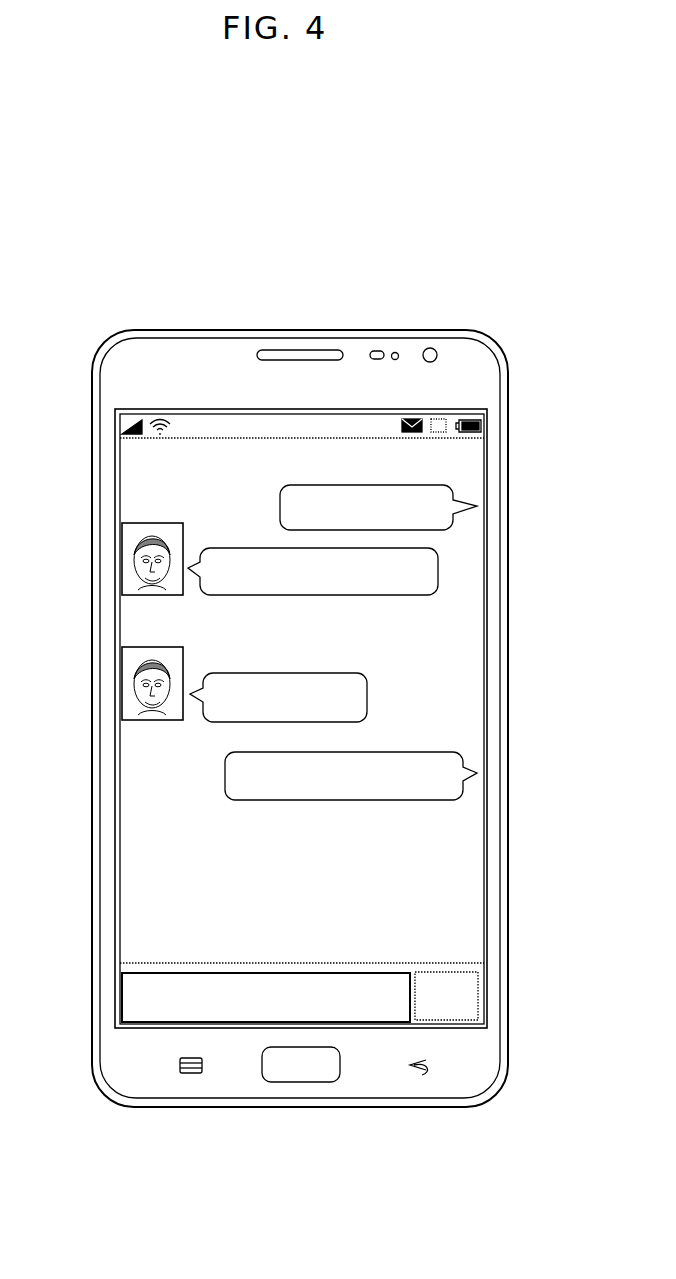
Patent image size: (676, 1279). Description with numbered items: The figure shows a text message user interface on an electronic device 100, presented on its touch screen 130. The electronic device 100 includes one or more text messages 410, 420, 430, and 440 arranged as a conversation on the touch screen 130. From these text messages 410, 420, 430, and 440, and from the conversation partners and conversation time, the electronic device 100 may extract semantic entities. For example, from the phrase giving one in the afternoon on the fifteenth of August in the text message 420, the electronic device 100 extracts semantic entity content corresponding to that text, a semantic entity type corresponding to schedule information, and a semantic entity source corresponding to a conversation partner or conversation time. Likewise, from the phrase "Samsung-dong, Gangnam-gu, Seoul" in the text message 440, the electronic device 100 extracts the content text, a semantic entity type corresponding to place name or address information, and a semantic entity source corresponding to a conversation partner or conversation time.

The electronic device 100 is at (300, 330).
The touch screen 130 is at (487, 933).
The text message 410 is at (478, 506).
The text message 420 is at (215, 595).
The text message 430 is at (218, 722).
The text message 440 is at (480, 771).